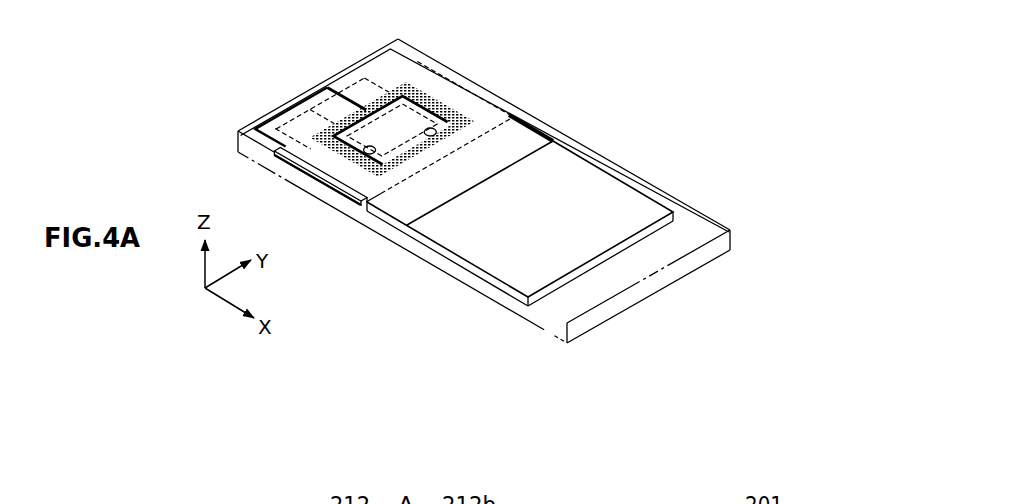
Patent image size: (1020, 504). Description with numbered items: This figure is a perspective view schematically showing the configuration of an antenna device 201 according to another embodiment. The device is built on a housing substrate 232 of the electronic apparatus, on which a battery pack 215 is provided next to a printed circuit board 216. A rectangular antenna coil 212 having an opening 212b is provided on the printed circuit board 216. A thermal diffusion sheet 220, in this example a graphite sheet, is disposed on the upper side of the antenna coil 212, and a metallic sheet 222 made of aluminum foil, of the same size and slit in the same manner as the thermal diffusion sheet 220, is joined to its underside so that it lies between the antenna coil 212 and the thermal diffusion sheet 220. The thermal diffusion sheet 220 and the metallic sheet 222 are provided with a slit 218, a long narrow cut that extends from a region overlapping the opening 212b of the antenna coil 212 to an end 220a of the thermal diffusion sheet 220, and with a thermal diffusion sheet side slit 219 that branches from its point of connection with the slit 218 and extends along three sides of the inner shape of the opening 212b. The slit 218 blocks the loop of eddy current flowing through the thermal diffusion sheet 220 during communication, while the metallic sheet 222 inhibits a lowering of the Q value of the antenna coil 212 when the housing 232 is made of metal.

The antenna device 201 is at (600, 88).
The antenna coil 212 is at (436, 94).
The opening 212b is at (506, 122).
The battery pack 215 is at (593, 187).
The printed circuit board 216 is at (306, 163).
The slit 218 is at (336, 90).
The thermal diffusion sheet side slit 219 is at (338, 154).
The thermal diffusion sheet 220 is at (407, 72).
The end of the thermal diffusion sheet 220a is at (347, 80).
The metallic sheet 222 is at (326, 187).
The housing substrate 232 is at (690, 187).